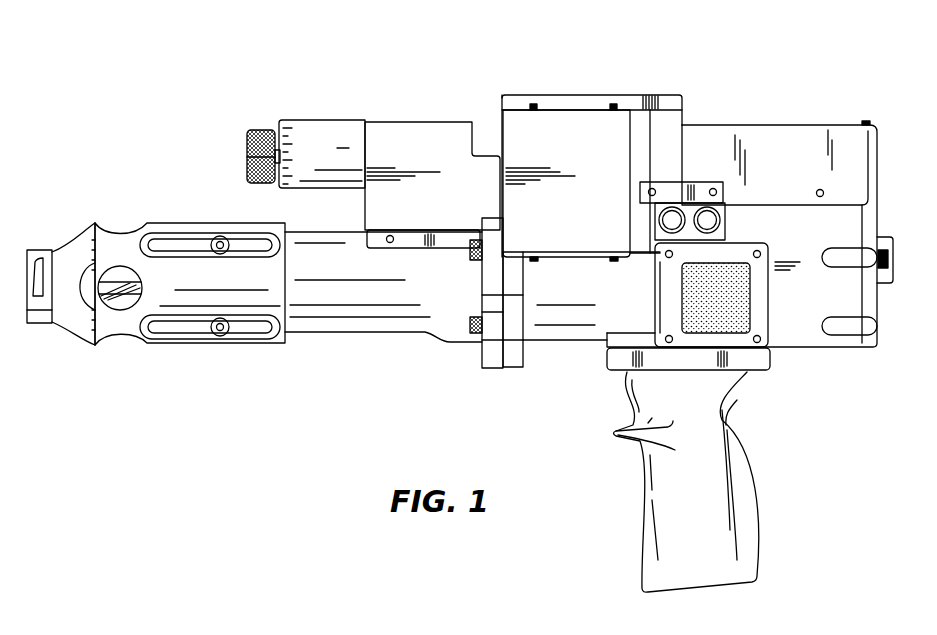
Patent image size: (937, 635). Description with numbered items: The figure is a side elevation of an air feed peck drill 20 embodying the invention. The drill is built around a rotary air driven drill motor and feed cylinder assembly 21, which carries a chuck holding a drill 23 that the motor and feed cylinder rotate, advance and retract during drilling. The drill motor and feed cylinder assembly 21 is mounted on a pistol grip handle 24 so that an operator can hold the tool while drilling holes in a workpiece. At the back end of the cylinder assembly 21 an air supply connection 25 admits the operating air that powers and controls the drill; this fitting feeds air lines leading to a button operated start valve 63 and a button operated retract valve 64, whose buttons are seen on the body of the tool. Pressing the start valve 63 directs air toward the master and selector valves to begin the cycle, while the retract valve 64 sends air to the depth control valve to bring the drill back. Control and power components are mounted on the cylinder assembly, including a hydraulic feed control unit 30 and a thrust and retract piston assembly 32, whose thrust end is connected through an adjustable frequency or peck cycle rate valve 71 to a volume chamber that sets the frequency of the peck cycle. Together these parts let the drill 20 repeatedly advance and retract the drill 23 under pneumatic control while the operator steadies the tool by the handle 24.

The air feed peck drill 20 is at (388, 93).
The drill motor and feed cylinder assembly 21 is at (465, 343).
The drill 23 is at (127, 297).
The pistol grip handle 24 is at (733, 503).
The air supply connection 25 is at (880, 268).
The hydraulic feed control unit 30 is at (318, 148).
The thrust and retract piston assembly 32 is at (563, 103).
The start valve 63 is at (667, 207).
The retract valve 64 is at (700, 205).
The adjustable frequency or peck cycle rate valve 71 is at (488, 133).